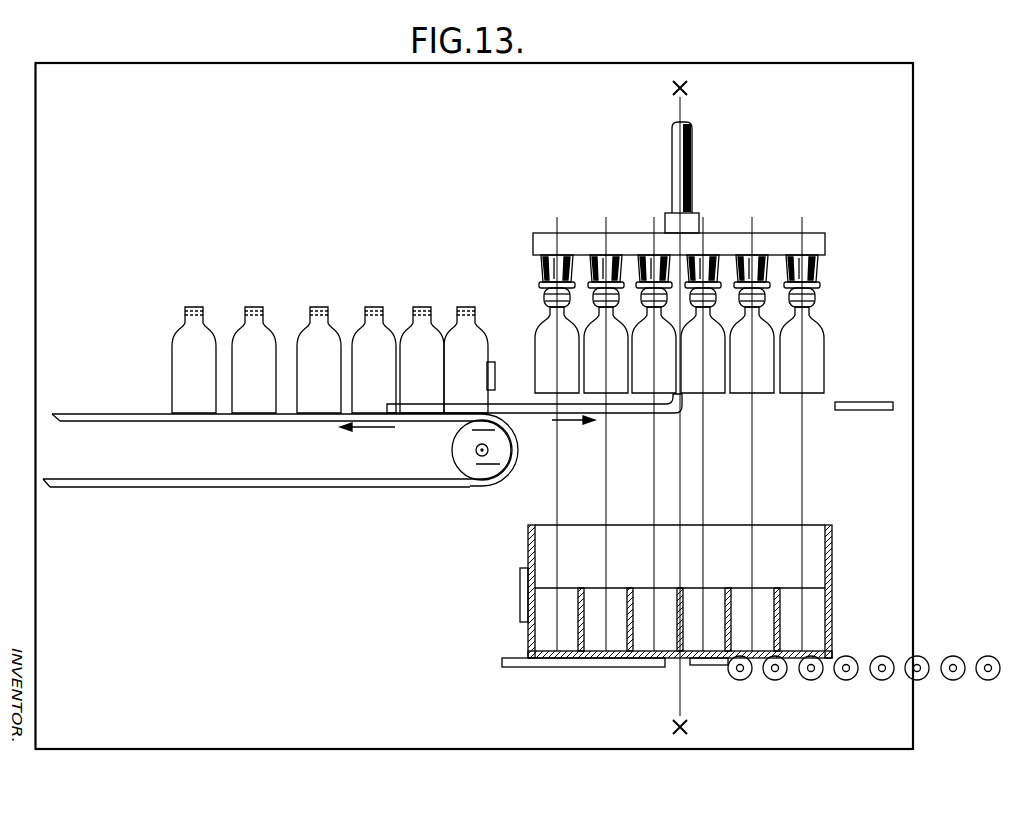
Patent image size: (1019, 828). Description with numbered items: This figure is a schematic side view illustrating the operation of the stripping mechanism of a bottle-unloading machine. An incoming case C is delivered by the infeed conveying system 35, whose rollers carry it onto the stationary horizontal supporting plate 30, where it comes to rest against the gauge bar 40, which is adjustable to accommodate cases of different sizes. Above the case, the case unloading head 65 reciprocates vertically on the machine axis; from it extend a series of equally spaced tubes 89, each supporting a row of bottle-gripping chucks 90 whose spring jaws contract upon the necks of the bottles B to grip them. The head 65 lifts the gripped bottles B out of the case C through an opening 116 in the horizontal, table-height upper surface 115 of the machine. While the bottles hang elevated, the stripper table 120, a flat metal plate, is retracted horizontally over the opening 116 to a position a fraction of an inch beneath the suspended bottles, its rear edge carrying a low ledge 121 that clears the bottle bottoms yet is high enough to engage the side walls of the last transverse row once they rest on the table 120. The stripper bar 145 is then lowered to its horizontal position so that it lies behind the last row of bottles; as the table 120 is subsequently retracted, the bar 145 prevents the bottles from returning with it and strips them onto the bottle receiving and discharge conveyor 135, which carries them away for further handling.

The stationary horizontal supporting plate 30 is at (512, 658).
The infeed conveying system 35 is at (960, 657).
The gauge bar 40 is at (520, 582).
The case unloading head 65 is at (577, 236).
The tubes 89 is at (704, 171).
The bottle-gripping chucks 90 is at (540, 263).
The upper surface 115 is at (858, 402).
The opening 116 is at (818, 408).
The stripper table 120 is at (530, 408).
The ledge 121 is at (684, 407).
The bottle receiving and discharge conveyor 135 is at (242, 480).
The stripper bar 145 is at (494, 365).
The bottle B is at (818, 323).
The cases C is at (822, 560).